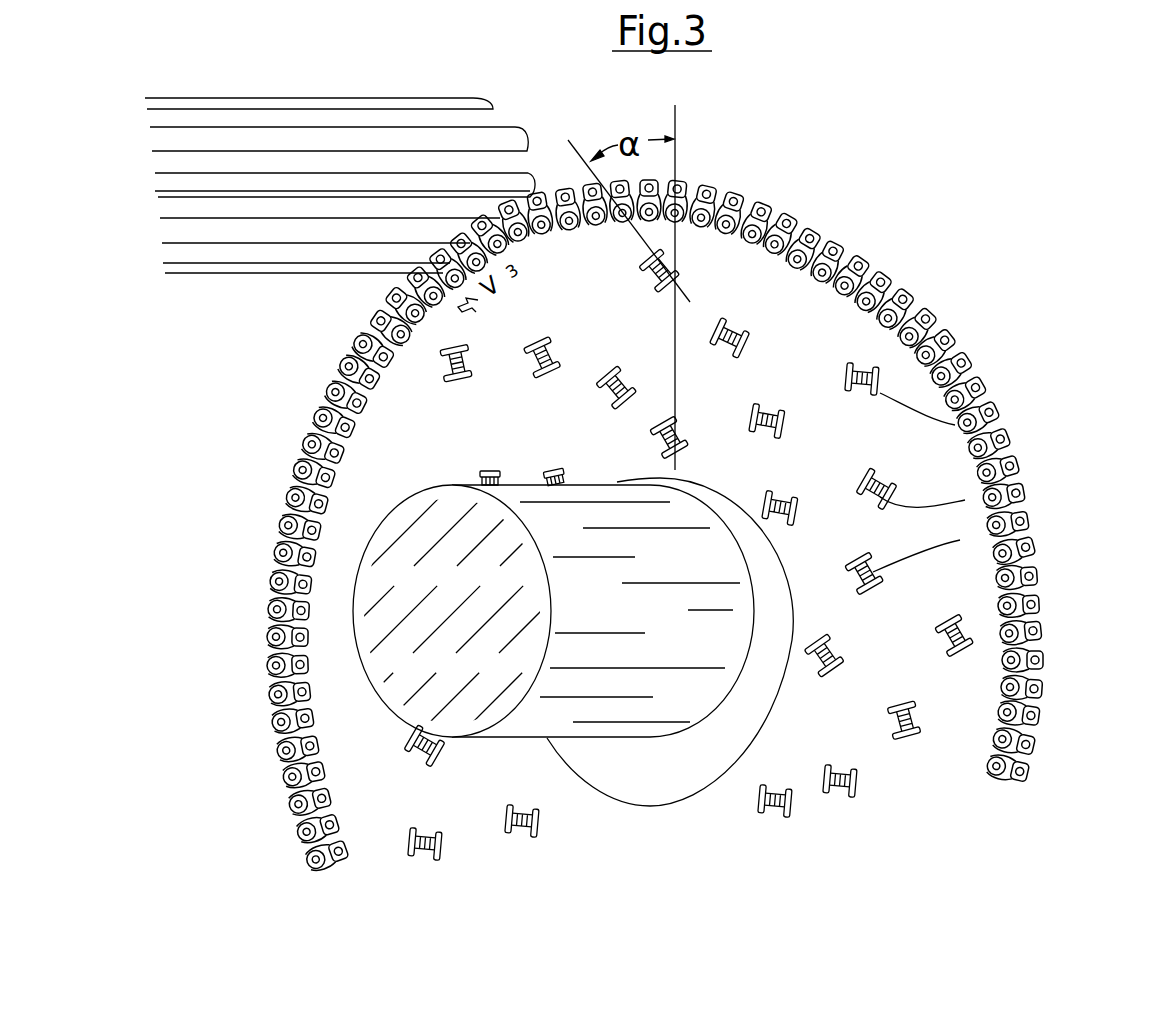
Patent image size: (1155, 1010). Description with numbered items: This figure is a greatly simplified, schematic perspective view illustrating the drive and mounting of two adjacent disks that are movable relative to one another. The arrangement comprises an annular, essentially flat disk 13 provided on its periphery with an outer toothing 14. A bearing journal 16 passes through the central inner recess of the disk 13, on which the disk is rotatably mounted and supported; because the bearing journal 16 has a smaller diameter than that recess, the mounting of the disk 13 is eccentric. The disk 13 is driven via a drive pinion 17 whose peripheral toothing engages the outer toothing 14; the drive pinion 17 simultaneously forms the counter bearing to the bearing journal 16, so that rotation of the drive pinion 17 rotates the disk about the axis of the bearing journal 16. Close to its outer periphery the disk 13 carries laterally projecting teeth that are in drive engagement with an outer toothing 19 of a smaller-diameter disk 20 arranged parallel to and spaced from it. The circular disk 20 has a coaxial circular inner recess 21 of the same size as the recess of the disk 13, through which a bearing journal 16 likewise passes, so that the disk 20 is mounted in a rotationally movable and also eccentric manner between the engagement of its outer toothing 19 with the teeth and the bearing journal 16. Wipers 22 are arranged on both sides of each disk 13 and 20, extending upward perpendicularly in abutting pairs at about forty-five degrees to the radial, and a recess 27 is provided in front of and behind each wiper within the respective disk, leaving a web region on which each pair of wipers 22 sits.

The disk 13 is at (700, 527).
The outer toothing 14 is at (978, 372).
The bearing journal 16 is at (618, 615).
The drive pinion 17 is at (240, 243).
The outer toothing 19 is at (1037, 735).
The disk 20 is at (885, 282).
The inner recess 21 is at (653, 812).
The wipers 22 is at (1002, 530).
The recess 27 is at (960, 455).